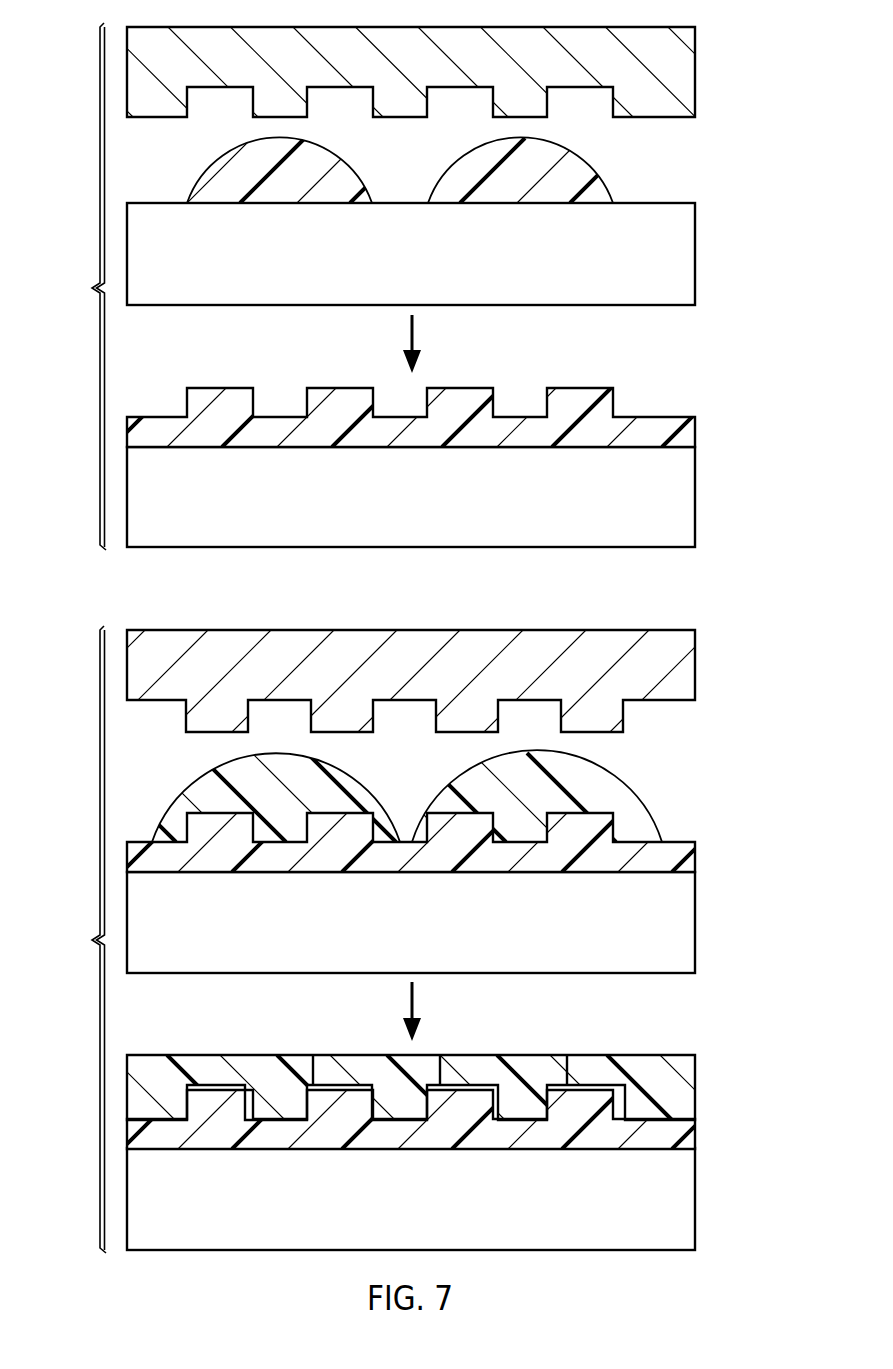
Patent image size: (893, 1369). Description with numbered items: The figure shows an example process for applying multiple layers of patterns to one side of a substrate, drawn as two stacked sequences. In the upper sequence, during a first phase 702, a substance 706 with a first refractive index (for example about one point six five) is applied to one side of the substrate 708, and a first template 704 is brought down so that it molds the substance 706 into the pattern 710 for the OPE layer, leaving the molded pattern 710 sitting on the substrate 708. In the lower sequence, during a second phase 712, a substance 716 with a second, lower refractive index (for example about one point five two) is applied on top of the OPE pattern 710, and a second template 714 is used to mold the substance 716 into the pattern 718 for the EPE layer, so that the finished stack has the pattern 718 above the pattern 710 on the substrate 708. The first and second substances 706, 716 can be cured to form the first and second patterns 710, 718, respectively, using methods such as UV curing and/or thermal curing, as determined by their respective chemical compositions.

The first phase 702 is at (72, 286).
The first template 704 is at (687, 76).
The substance 706 is at (575, 169).
The substrate 708 is at (687, 254).
The pattern 710 is at (687, 434).
The second phase 712 is at (72, 939).
The second template 714 is at (687, 681).
The substance 716 is at (630, 821).
The pattern 718 is at (687, 1069).